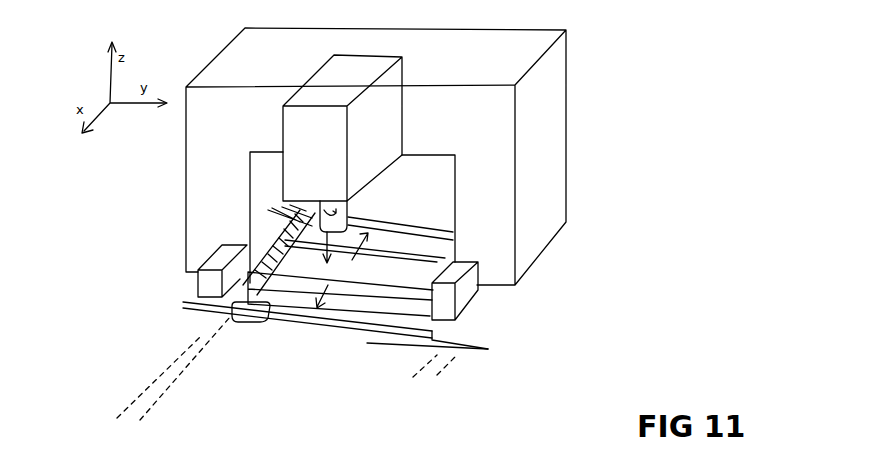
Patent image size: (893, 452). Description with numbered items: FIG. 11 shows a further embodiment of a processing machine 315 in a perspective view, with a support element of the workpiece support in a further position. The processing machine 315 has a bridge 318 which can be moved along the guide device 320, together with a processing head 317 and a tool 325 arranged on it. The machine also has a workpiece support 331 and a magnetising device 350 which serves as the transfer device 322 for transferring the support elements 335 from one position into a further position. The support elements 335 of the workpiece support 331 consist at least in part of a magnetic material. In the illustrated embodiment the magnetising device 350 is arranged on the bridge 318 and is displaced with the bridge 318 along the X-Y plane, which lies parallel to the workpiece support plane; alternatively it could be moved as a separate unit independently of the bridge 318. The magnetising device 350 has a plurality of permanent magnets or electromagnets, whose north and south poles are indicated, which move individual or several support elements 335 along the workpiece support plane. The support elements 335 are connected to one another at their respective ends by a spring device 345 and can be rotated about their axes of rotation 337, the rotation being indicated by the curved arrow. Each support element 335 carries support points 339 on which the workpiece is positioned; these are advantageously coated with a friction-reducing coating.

The processing machine 315 is at (629, 51).
The processing head 317 is at (363, 78).
The bridge 318 is at (551, 122).
The guide device 320 is at (135, 401).
The transfer device 322 is at (531, 334).
The tool 325 is at (262, 213).
The workpiece support 331 is at (228, 356).
The support elements 335 is at (384, 350).
The axes of rotation 337 is at (466, 345).
The support points 339 is at (266, 312).
The spring device 345 is at (197, 293).
The magnetising device 350 is at (578, 286).